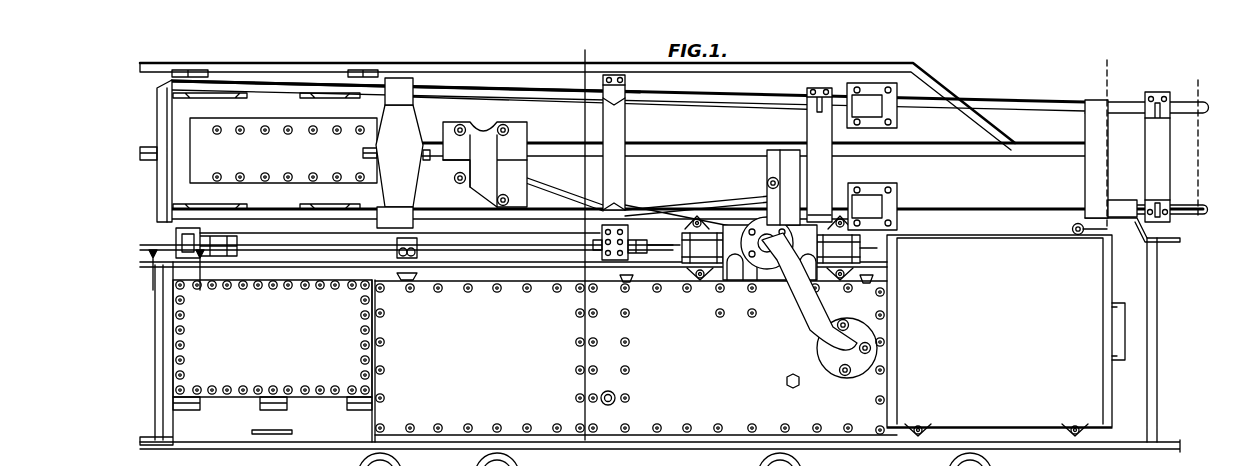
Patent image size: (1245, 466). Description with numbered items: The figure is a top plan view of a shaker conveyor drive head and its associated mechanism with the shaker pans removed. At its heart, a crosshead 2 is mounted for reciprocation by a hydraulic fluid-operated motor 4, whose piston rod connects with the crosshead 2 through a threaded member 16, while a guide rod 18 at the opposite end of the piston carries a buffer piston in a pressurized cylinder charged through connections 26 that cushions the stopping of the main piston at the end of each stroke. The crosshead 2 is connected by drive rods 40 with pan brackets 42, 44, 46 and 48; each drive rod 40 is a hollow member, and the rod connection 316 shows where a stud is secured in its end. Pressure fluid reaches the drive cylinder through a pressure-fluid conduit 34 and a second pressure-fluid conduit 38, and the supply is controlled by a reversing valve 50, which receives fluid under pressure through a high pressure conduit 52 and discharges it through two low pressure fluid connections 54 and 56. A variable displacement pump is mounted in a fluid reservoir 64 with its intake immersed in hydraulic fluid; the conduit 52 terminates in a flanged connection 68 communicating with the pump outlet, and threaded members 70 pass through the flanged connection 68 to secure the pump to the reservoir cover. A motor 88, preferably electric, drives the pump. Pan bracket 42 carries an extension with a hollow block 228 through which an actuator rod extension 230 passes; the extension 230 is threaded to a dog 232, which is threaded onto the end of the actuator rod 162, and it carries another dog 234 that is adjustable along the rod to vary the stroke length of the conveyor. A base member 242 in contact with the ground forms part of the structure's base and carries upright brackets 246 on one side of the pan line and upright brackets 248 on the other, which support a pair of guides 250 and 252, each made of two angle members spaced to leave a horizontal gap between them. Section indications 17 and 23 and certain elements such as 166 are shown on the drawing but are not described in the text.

The crosshead 2 is at (398, 120).
The hydraulic fluid-operated motor 4 is at (558, 155).
The threaded member 16 is at (363, 153).
The section line 17 is at (1198, 80).
The guide rod 18 is at (1107, 60).
The section line 23 is at (256, 342).
The connections 26 is at (675, 459).
The pressure-fluid conduit 34 is at (655, 204).
The second pressure-fluid conduit 38 is at (780, 186).
The drive rods 40 is at (510, 95).
The pan bracket 42 is at (625, 130).
The pan bracket 44 is at (830, 103).
The pan bracket 46 is at (1088, 102).
The pan bracket 48 is at (1153, 98).
The reversing valve 50 is at (733, 275).
The high pressure fluid conduit 52 is at (800, 300).
The low pressure fluid connection 54 is at (735, 275).
The low pressure fluid connection 56 is at (824, 280).
The fluid reservoir 64 is at (868, 416).
The flanged connection 68 is at (825, 358).
The threaded members 70 is at (850, 325).
The motor 88 is at (1090, 381).
The actuator rod 162 is at (655, 256).
The cylinder 166 is at (878, 250).
The block 228 is at (645, 265).
The actuator rod extension 230 is at (550, 268).
The dog 232 is at (663, 262).
The dog 234 is at (420, 268).
The base member 242 is at (183, 113).
The upright brackets 246 is at (310, 97).
The upright brackets 248 is at (310, 206).
The guide 250 is at (297, 47).
The guide 252 is at (207, 222).
The rod connection 316 is at (1125, 201).